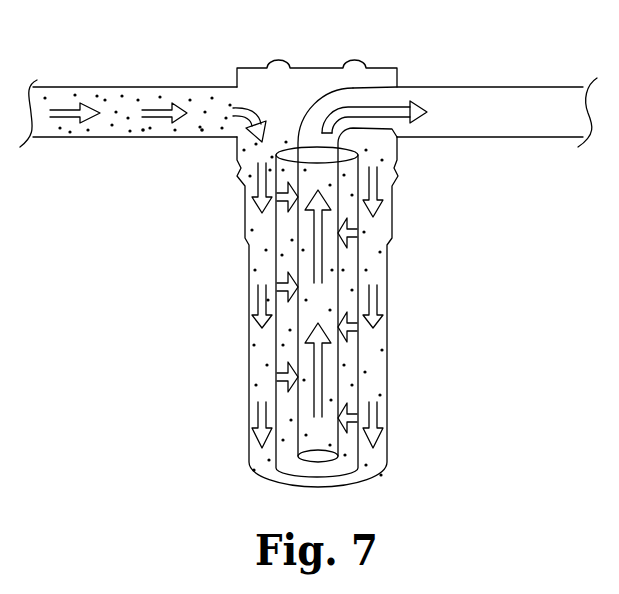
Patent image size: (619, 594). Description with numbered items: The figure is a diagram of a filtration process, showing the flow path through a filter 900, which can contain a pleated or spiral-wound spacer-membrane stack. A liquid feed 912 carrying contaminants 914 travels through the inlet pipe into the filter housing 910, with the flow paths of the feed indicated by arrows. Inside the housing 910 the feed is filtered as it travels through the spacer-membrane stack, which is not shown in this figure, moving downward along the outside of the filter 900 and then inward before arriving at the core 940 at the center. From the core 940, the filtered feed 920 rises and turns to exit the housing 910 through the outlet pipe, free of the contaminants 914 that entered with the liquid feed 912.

The filter 900 is at (358, 220).
The filter housing 910 is at (248, 390).
The liquid feed 912 is at (118, 100).
The contaminants 914 is at (202, 131).
The filtered feed 920 is at (510, 100).
The core 940 is at (340, 262).